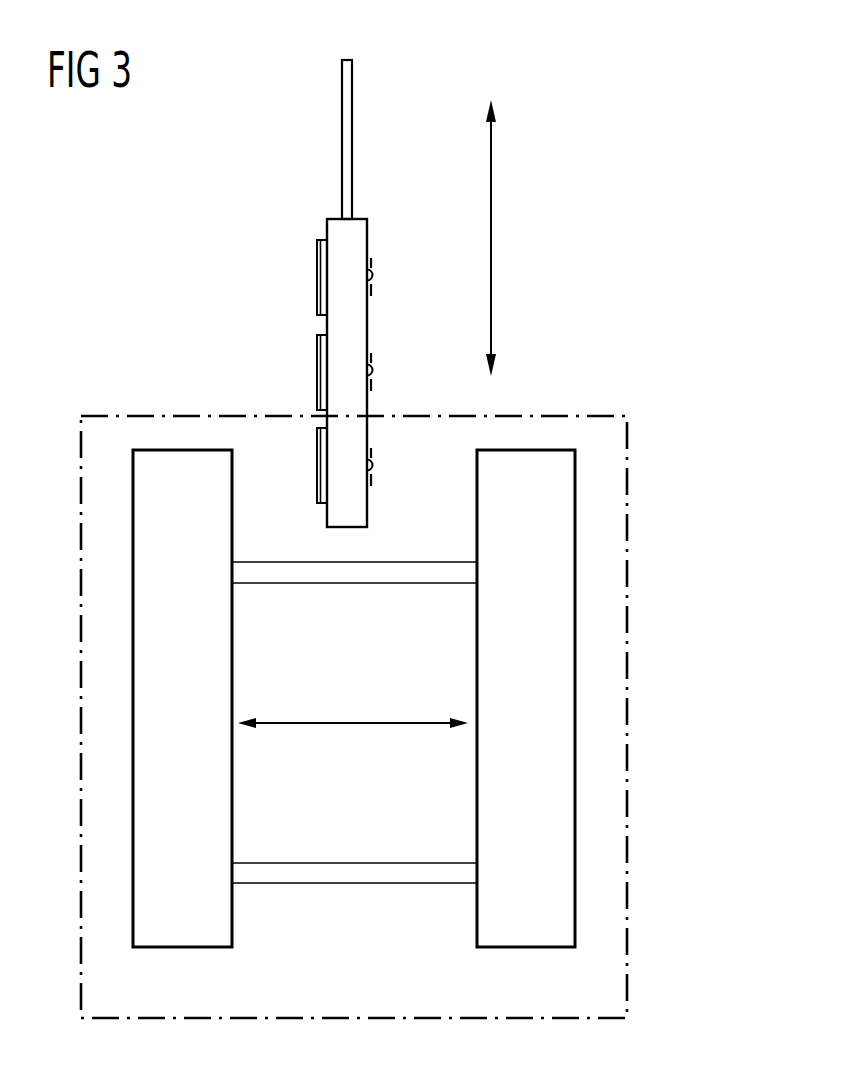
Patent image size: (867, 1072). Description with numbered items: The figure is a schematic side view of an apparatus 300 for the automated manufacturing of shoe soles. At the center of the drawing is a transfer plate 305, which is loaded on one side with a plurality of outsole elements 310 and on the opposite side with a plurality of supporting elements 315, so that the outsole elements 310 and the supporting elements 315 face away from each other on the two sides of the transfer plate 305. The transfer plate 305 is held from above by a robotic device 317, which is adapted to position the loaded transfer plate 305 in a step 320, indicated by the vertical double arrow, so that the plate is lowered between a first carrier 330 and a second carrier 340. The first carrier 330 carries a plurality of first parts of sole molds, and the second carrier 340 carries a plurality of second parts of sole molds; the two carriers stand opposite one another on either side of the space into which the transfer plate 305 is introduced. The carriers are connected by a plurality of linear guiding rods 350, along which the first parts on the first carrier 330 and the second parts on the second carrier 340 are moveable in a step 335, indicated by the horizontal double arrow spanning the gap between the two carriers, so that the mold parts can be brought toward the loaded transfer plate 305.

The apparatus 300 is at (655, 491).
The transfer plate 305 is at (367, 500).
The outsole elements 310 is at (303, 358).
The supporting elements 315 is at (383, 372).
The robotic device 317 is at (342, 137).
The positioning step 320 is at (491, 238).
The first carrier 330 is at (182, 698).
The moving step 335 is at (353, 704).
The second carrier 340 is at (526, 698).
The linear guiding rods 350 is at (348, 875).